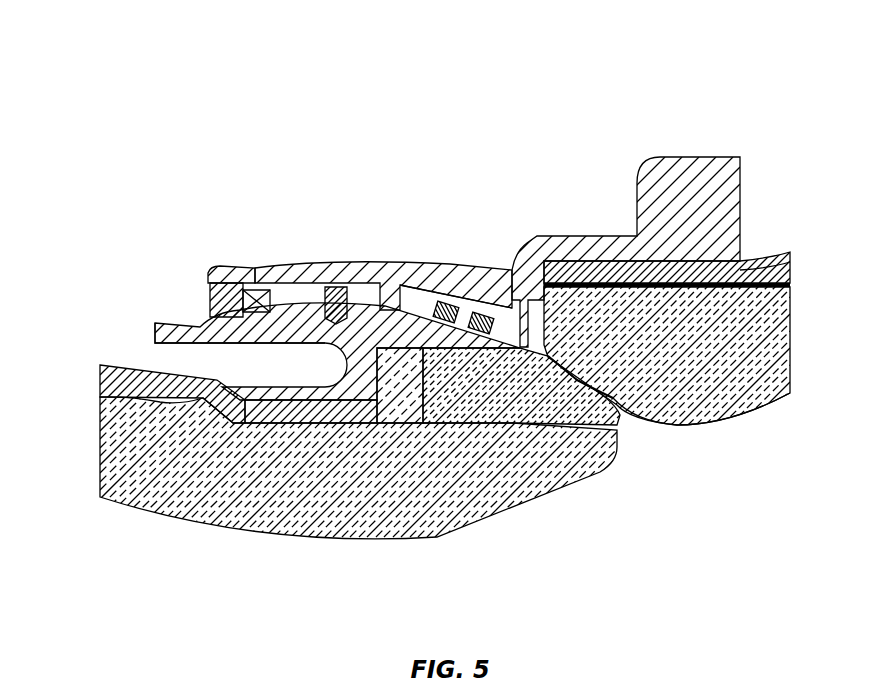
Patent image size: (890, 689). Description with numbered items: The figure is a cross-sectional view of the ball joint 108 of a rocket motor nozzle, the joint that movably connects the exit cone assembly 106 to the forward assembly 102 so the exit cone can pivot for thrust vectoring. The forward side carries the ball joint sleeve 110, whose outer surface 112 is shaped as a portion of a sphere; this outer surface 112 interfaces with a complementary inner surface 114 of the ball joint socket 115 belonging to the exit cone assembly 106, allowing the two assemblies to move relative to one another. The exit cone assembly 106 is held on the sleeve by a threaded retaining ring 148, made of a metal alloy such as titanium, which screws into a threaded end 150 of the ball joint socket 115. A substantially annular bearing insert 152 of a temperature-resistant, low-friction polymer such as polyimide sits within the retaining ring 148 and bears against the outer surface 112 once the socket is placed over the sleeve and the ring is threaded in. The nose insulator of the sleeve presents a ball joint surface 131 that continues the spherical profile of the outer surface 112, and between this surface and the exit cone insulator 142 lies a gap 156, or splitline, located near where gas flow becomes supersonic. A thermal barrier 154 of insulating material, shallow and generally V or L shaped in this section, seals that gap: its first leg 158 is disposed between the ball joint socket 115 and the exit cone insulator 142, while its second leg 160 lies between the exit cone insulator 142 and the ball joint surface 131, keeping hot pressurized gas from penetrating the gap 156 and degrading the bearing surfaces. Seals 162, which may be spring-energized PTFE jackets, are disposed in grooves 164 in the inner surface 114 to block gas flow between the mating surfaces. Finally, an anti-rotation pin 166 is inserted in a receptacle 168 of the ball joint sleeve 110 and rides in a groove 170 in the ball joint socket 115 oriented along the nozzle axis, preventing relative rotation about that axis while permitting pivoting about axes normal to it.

The forward assembly 102 is at (67, 480).
The exit cone assembly 106 is at (823, 315).
The ball joint 108 is at (373, 133).
The ball joint sleeve 110 is at (200, 326).
The outer surface 112 is at (363, 267).
The inner surface 114 is at (405, 284).
The ball joint socket 115 is at (437, 304).
The ball joint surface 131 is at (583, 365).
The exit cone insulator 142 is at (727, 392).
The retaining ring 148 is at (210, 290).
The threaded end 150 is at (207, 265).
The bearing insert 152 is at (257, 289).
The thermal barrier 154 is at (548, 325).
The gap 156 is at (630, 416).
The first leg 158 is at (520, 290).
The second leg 160 is at (533, 368).
The seals 162 is at (447, 352).
The grooves 164 is at (423, 350).
The anti-rotation pin 166 is at (316, 340).
The receptacle 168 is at (270, 395).
The groove 170 is at (295, 292).